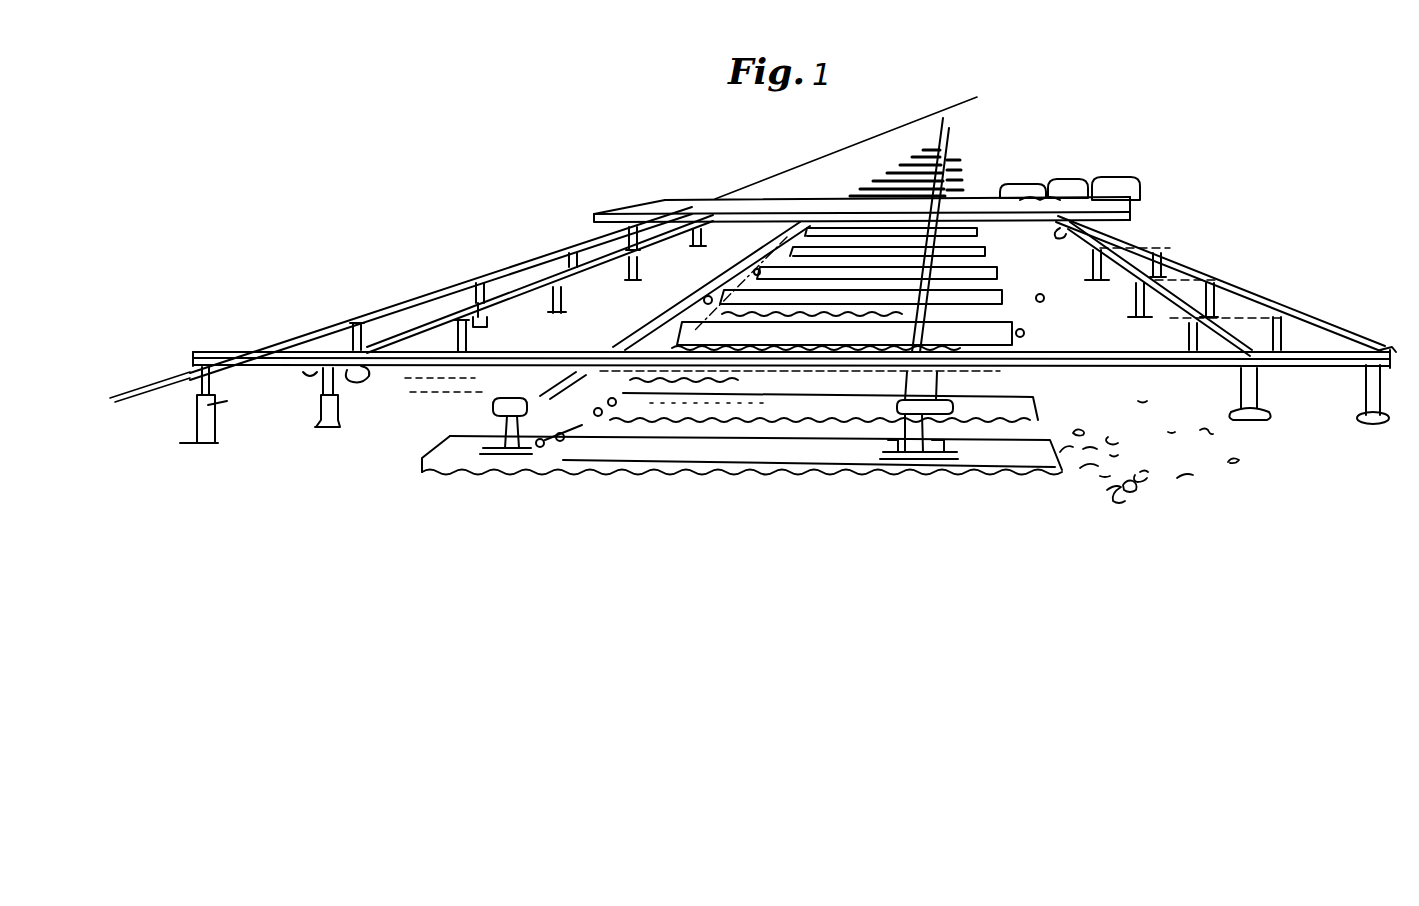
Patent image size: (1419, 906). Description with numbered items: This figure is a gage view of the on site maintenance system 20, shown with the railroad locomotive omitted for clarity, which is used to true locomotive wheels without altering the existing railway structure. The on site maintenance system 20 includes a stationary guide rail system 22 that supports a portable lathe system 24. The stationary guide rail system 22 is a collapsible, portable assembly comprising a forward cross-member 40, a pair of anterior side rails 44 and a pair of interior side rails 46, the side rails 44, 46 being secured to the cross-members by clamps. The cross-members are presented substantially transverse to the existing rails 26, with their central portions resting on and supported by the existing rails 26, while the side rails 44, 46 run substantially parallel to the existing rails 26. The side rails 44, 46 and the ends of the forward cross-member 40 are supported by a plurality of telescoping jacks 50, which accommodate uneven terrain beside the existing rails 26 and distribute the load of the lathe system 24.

The on site maintenance system 20 is at (500, 163).
The stationary guide rail system 22 is at (327, 323).
The lathe system 24 is at (758, 199).
The existing rails 26 is at (517, 433).
The forward cross-member 40 is at (400, 370).
The anterior side rails 44 is at (400, 302).
The interior side rails 46 is at (540, 287).
The telescoping jacks 50 is at (333, 430).